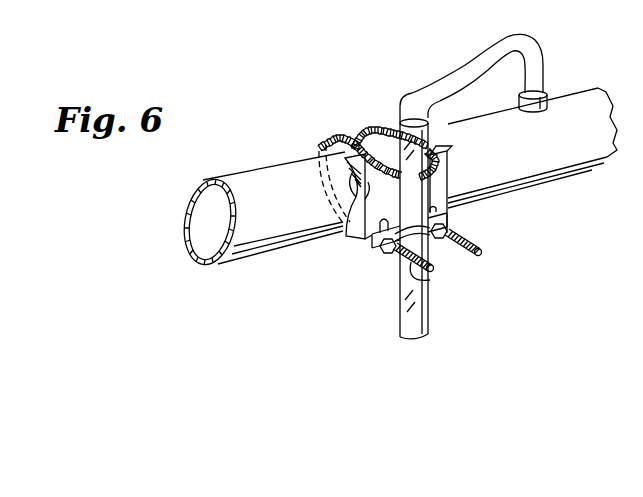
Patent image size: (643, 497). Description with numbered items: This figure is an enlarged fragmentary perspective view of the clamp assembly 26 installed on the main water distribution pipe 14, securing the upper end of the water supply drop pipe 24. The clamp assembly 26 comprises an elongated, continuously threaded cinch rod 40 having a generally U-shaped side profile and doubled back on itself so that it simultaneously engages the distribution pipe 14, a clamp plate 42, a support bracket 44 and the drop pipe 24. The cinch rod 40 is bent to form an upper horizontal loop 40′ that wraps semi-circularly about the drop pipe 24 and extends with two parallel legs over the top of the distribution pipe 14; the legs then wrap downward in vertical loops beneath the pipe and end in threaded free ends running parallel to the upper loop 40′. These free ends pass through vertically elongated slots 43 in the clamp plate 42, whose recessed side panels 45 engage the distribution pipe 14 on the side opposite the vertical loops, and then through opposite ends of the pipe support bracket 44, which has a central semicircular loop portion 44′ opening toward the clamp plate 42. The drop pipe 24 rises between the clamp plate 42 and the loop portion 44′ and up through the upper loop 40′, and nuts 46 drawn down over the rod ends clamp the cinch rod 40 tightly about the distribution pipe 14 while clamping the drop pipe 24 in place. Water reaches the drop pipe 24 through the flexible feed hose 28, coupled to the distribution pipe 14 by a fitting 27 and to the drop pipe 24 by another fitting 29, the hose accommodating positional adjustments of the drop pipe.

The main water distribution pipe 14 is at (573, 168).
The water supply drop pipe 24 is at (420, 328).
The clamp assembly 26 is at (307, 273).
The fitting 27 is at (551, 91).
The flexible feed hose 28 is at (487, 50).
The fitting 29 is at (410, 96).
The cinch rod 40 is at (357, 138).
The upper horizontal loop 40′ is at (440, 151).
The clamp plate 42 is at (449, 173).
The vertically elongated slots 43 is at (365, 199).
The pipe support bracket 44 is at (449, 217).
The semicircular loop portion 44′ is at (433, 249).
The recessed side panels 45 is at (355, 170).
The nuts 46 is at (385, 254).